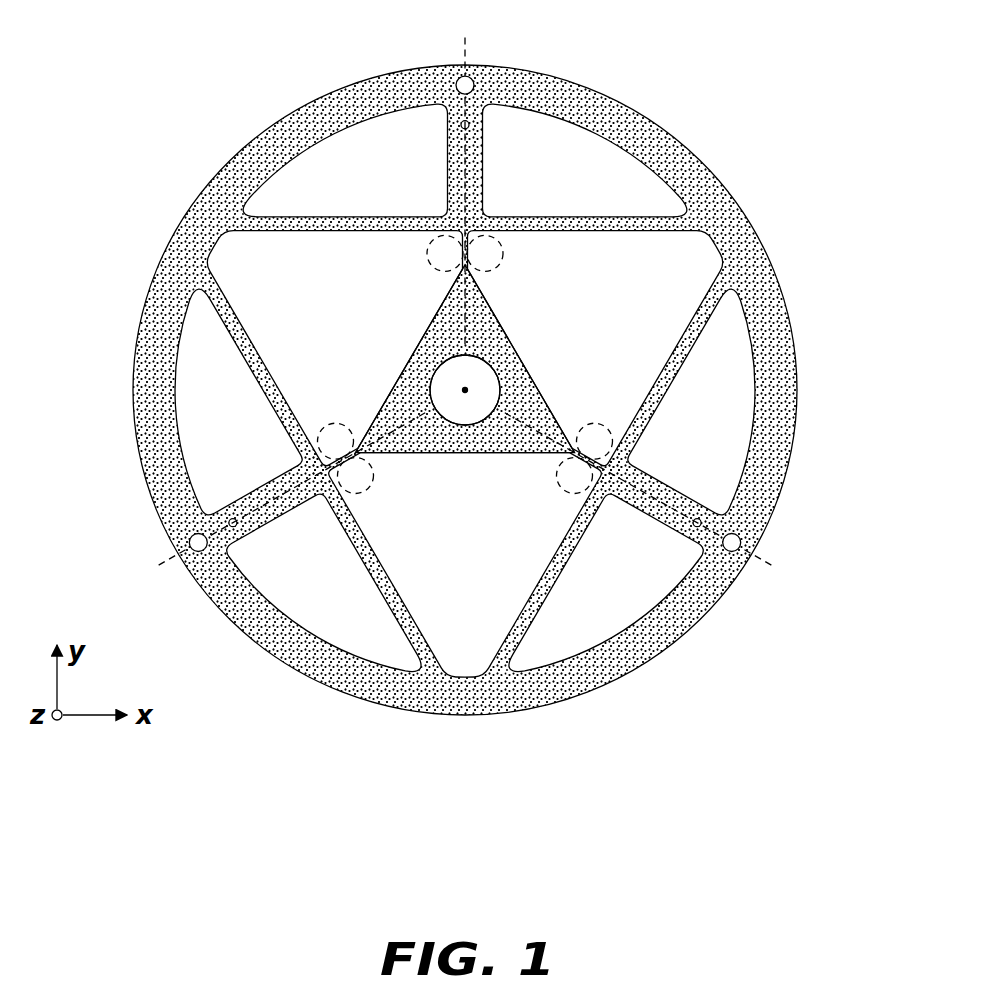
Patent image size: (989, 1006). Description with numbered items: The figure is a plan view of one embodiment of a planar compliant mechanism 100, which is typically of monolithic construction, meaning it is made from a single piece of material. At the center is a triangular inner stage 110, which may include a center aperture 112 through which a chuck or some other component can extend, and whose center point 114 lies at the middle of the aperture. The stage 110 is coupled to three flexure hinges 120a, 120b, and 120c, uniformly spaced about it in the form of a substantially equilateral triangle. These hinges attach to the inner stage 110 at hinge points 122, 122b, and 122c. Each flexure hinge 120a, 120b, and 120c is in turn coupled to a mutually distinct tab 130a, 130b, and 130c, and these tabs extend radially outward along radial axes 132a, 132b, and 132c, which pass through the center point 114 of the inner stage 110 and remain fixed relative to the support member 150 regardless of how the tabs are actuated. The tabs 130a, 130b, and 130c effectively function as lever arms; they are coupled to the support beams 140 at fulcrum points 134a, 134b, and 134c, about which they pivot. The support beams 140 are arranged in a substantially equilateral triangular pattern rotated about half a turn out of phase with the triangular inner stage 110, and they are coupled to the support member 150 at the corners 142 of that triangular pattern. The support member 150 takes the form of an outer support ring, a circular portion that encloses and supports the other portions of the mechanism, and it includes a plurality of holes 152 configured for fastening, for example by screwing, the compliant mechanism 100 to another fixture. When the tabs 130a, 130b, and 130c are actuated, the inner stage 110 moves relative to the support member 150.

The planar compliant mechanism 100 is at (466, 397).
The stage 110 is at (425, 440).
The center aperture 112 is at (463, 355).
The center point 114 is at (465, 392).
The flexure hinge 120a is at (500, 278).
The flexure hinge 120b is at (603, 414).
The flexure hinge 120c is at (327, 414).
The hinge point 122 is at (468, 252).
The hinge point 122b is at (581, 454).
The hinge point 122c is at (349, 454).
The tab 130a is at (475, 152).
The tab 130b is at (680, 500).
The tab 130c is at (250, 500).
The radial axis 132a is at (472, 45).
The radial axis 132b is at (763, 562).
The radial axis 132c is at (167, 562).
The fulcrum point 134a is at (462, 220).
The fulcrum point 134b is at (617, 478).
The fulcrum point 134c is at (313, 478).
The support beam 140 is at (287, 224).
The corner 142 is at (195, 233).
The support member 150 is at (157, 420).
The hole 152 is at (458, 80).